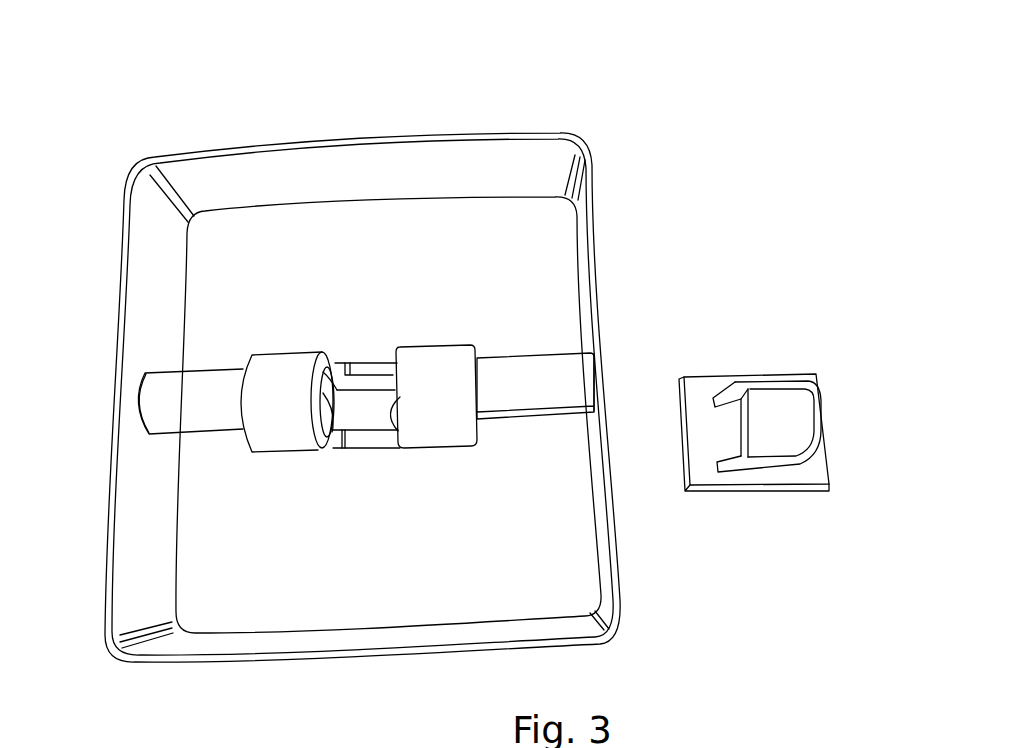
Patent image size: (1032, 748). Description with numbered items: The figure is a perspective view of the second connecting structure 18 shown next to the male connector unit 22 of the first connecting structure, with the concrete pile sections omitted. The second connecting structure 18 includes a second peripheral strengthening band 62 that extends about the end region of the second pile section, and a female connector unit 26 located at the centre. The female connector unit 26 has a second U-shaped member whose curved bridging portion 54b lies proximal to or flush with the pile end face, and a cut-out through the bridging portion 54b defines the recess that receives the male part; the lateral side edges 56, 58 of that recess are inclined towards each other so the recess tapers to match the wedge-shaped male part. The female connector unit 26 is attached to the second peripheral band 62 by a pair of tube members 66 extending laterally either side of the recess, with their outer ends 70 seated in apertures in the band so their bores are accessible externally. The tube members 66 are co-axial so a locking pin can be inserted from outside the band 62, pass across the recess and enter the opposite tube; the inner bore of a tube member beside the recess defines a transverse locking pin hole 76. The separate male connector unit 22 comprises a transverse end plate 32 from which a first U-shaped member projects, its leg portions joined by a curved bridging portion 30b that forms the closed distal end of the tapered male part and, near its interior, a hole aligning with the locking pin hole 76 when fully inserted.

The second connecting structure 18 is at (449, 105).
The male connector unit 22 is at (810, 394).
The female connector unit 26 is at (381, 386).
The curved bridging portion 30b is at (810, 405).
The transverse end plate 32 is at (820, 470).
The curved bridging portion 54b is at (433, 370).
The lateral side edge of recess 56 is at (346, 360).
The lateral side edge of recess 58 is at (405, 397).
The second peripheral strengthening band 62 is at (614, 587).
The tube members 66 is at (177, 387).
The outer ends of tube members 70 is at (152, 405).
The transverse locking pin hole 76 is at (323, 448).